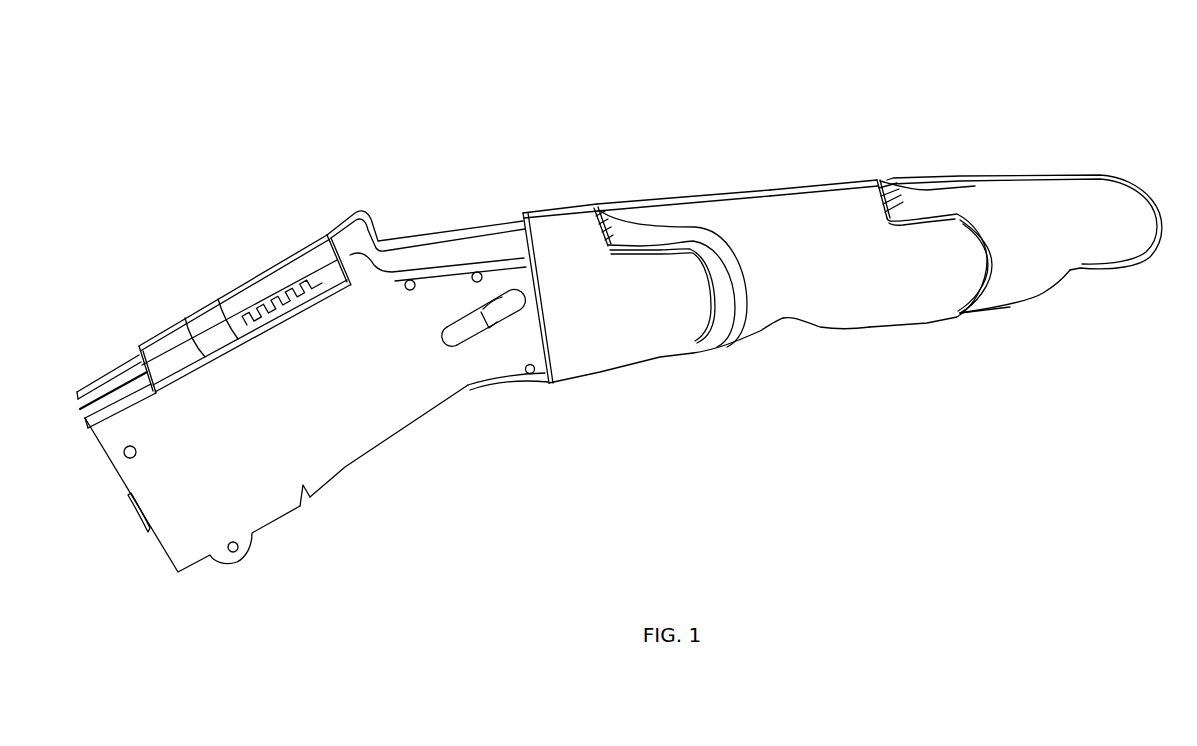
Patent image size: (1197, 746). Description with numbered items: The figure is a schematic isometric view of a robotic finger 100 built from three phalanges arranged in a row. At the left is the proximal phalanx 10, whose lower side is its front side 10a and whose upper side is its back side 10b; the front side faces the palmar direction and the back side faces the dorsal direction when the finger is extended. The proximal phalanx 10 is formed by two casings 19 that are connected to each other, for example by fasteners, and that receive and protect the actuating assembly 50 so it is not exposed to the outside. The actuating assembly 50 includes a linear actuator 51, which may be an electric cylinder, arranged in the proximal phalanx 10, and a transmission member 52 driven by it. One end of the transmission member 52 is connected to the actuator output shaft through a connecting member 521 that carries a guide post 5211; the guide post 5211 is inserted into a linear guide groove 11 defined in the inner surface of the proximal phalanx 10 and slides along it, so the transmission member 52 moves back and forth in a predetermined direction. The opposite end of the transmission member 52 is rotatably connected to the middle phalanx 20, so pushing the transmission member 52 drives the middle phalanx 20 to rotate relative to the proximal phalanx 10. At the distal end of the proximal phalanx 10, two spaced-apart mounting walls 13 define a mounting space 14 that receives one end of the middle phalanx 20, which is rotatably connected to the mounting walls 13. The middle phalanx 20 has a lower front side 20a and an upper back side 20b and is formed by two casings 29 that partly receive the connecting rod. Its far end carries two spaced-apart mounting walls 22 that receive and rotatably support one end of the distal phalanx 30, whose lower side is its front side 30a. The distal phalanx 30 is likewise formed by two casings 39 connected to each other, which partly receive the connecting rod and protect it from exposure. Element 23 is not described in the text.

The robotic finger 100 is at (620, 36).
The proximal phalanx 10 is at (337, 414).
The front side of the proximal phalanx 10a is at (318, 476).
The back side of the proximal phalanx 10b is at (342, 233).
The casings 19 is at (237, 382).
The actuating assembly 50 is at (265, 302).
The linear actuator 51 is at (303, 285).
The transmission member 52 is at (496, 301).
The connecting member 521 is at (465, 320).
The guide post 5211 is at (457, 337).
The linear guide groove 11 is at (481, 325).
The mounting walls 13 is at (643, 290).
The mounting space 14 is at (622, 200).
The casings 29 is at (770, 200).
The back side of the middle phalanx 20b is at (835, 185).
The middle phalanx 20 is at (797, 270).
The front side of the middle phalanx 20a is at (760, 335).
The clasp 23 is at (903, 193).
The mounting walls 22 is at (925, 283).
The distal phalanx 30 is at (1067, 257).
The front side of the distal phalanx 30a is at (1023, 305).
The casings 39 is at (1082, 220).